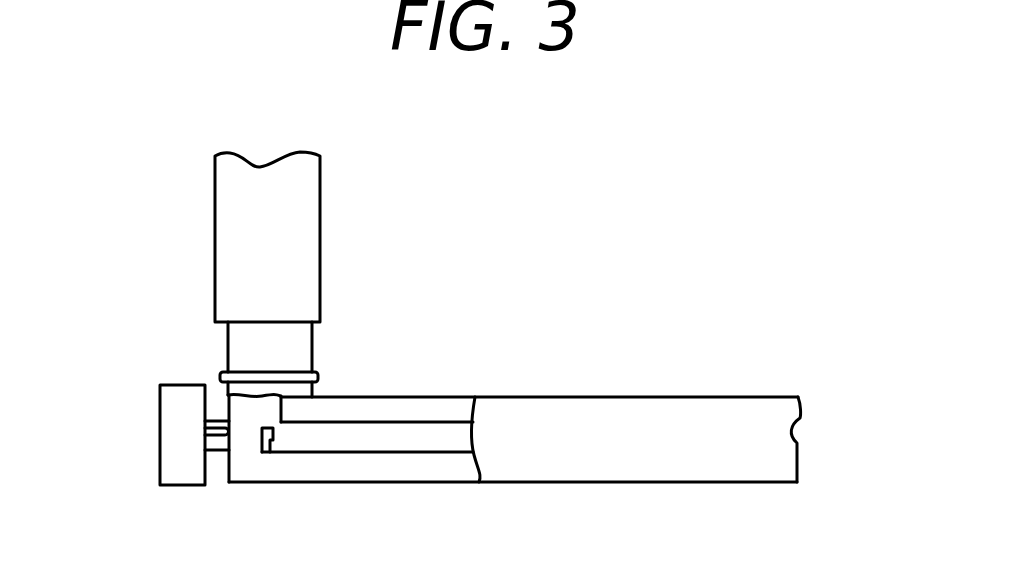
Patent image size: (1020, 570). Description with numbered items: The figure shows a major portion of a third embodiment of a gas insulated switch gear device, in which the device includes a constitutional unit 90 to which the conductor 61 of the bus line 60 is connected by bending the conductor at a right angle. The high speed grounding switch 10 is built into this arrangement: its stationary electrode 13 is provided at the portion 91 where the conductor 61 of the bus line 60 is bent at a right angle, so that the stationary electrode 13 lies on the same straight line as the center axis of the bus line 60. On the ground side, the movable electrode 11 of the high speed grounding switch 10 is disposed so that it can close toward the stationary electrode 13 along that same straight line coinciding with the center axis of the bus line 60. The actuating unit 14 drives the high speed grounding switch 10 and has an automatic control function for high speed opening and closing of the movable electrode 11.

The high speed grounding switch 10 is at (160, 447).
The movable electrode 11 is at (222, 451).
The stationary electrode 13 is at (270, 451).
The actuating unit 14 is at (175, 384).
The bus line 60 is at (442, 397).
The conductor 61 is at (418, 443).
The constitutional unit 90 is at (224, 215).
The bent portion 91 is at (282, 417).